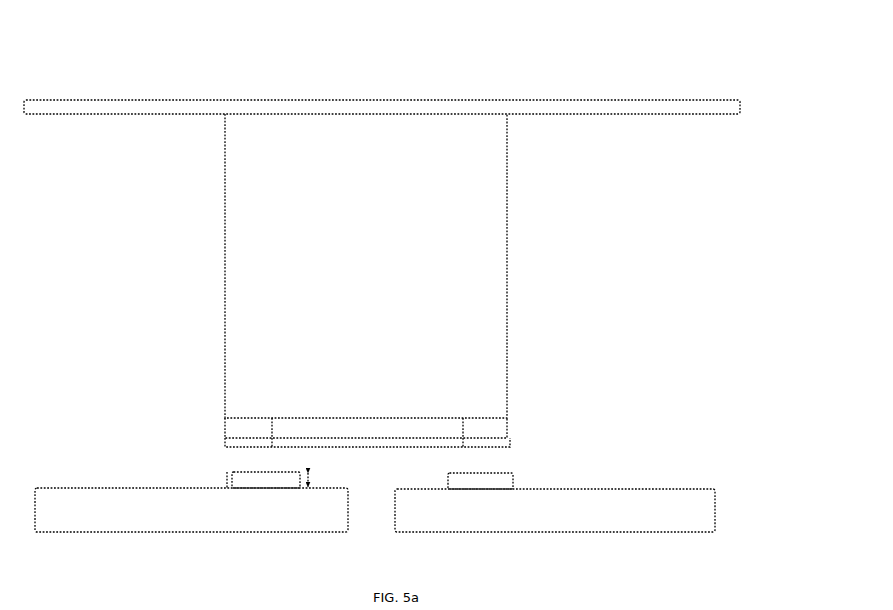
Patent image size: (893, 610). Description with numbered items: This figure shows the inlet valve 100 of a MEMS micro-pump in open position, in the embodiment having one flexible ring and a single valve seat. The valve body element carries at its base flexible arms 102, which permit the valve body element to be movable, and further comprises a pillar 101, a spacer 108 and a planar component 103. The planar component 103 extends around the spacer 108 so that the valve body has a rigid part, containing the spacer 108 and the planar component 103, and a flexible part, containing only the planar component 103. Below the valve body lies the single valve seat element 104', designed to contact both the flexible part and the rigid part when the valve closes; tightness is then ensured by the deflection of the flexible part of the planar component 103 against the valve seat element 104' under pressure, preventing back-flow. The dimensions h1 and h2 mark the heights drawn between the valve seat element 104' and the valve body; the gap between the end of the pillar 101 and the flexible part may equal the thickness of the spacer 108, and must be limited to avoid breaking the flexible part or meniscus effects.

The inlet valve 100 is at (714, 77).
The pillar 101 is at (498, 216).
The flexible arms 102 is at (143, 97).
The planar component 103 is at (511, 438).
The spacer 108 is at (272, 427).
The valve seat element 104' is at (372, 472).
The height h1 is at (321, 482).
The height h2 is at (216, 479).